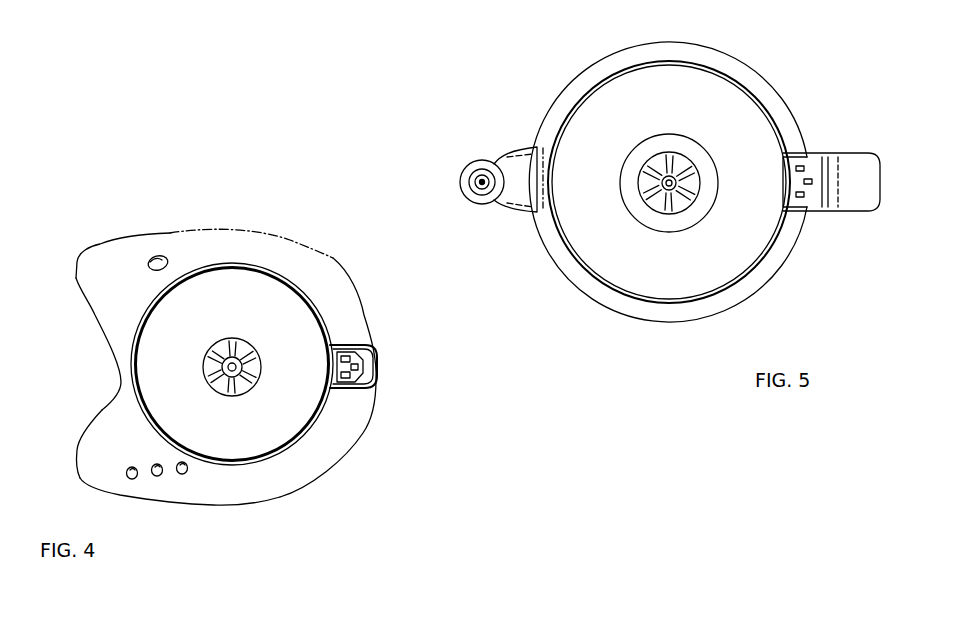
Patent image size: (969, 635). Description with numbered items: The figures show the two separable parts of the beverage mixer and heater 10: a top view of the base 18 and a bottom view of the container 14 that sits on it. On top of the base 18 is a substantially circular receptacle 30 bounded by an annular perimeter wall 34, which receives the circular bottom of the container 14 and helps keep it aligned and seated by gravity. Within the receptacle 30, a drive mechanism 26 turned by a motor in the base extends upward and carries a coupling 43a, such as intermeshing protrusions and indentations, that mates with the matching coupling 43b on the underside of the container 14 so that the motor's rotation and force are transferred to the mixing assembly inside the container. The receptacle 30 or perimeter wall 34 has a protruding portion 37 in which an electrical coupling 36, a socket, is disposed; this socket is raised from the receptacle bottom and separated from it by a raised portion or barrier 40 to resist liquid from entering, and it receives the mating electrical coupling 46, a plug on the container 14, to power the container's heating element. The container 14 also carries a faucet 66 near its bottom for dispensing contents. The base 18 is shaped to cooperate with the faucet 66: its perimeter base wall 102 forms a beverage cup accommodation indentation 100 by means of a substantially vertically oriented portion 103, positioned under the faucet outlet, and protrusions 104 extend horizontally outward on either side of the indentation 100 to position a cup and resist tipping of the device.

In FIG. 4, the beverage mixer and heater 10 is at (231, 350).
In FIG. 5, the beverage mixer and heater 10 is at (667, 195).
In FIG. 5, the container 14 is at (678, 42).
In FIG. 4, the base 18 is at (208, 505).
In FIG. 4, the drive mechanism 26 is at (262, 372).
In FIG. 4, the receptacle 30 is at (233, 292).
In FIG. 4, the perimeter wall 34 is at (296, 290).
In FIG. 4, the electrical coupling 36 is at (363, 370).
In FIG. 4, the protruding portion 37 is at (343, 345).
In FIG. 4, the raised portion or barrier 40 is at (330, 365).
In FIG. 4, the coupling 43a is at (214, 381).
In FIG. 5, the coupling 43b is at (678, 194).
In FIG. 5, the mating electrical coupling 46 is at (806, 181).
In FIG. 5, the faucet 66 is at (460, 160).
In FIG. 4, the beverage cup accommodation indentation 100 is at (195, 365).
In FIG. 4, the perimeter base wall 102 is at (163, 233).
In FIG. 4, the vertically oriented portion 103 is at (100, 410).
In FIG. 4, the protrusion 104 is at (76, 278).